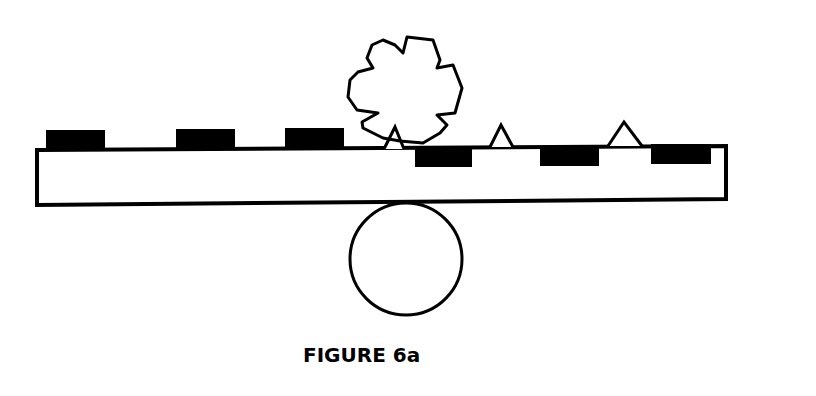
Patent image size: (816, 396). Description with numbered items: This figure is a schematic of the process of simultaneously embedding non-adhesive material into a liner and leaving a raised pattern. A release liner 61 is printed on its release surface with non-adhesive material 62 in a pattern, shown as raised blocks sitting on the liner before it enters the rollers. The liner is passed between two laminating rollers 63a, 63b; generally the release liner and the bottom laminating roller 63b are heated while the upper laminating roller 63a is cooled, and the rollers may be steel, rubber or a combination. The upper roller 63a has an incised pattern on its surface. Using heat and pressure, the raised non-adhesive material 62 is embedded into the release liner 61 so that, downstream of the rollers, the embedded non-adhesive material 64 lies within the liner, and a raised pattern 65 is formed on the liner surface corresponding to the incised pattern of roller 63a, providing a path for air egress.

The release liner 61 is at (72, 206).
The non-adhesive material 62 is at (90, 130).
The laminating roller 63a is at (372, 70).
The laminating roller 63b is at (352, 276).
The non-adhesive material 64 is at (695, 144).
The raised pattern 65 is at (614, 142).